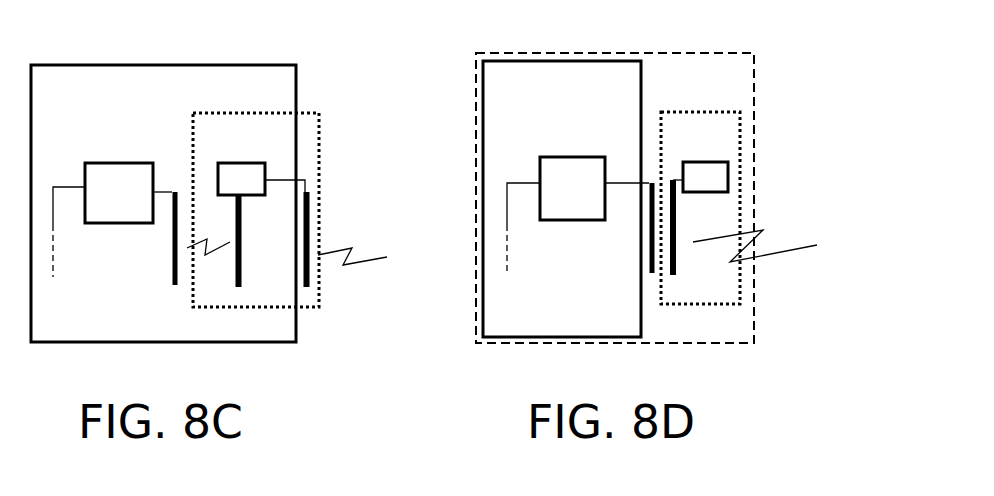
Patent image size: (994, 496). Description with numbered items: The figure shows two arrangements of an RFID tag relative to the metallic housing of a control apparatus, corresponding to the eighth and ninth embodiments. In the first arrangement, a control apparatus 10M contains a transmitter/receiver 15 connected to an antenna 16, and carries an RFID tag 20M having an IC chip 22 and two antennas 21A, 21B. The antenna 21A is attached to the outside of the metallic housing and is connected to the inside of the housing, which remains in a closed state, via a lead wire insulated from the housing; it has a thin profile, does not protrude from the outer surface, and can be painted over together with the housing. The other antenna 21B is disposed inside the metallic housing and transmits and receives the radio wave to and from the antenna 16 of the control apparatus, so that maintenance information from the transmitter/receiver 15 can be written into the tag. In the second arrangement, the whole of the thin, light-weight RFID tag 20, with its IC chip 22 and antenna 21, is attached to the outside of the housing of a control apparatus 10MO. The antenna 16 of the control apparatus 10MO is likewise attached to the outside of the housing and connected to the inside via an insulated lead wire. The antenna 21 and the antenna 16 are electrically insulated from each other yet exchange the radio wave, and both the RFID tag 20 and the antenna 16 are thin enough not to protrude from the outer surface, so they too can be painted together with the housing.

In FIG. 8C, the control apparatus 10M is at (104, 64).
In FIG. 8D, the control apparatus 10MO is at (560, 60).
In FIG. 8C, the transmitter/receiver 15 is at (110, 163).
In FIG. 8D, the transmitter/receiver 15 is at (562, 157).
In FIG. 8C, the antenna 16 is at (172, 238).
In FIG. 8D, the antenna 16 is at (649, 233).
In FIG. 8C, the RFID tag 20M is at (252, 113).
In FIG. 8D, the RFID tag 20 is at (700, 112).
In FIG. 8C, the IC chip 22 is at (265, 163).
In FIG. 8D, the IC chip 22 is at (710, 162).
In FIG. 8C, the antenna 21A is at (312, 208).
In FIG. 8C, the antenna 21B is at (238, 287).
In FIG. 8D, the antenna 21 is at (673, 222).